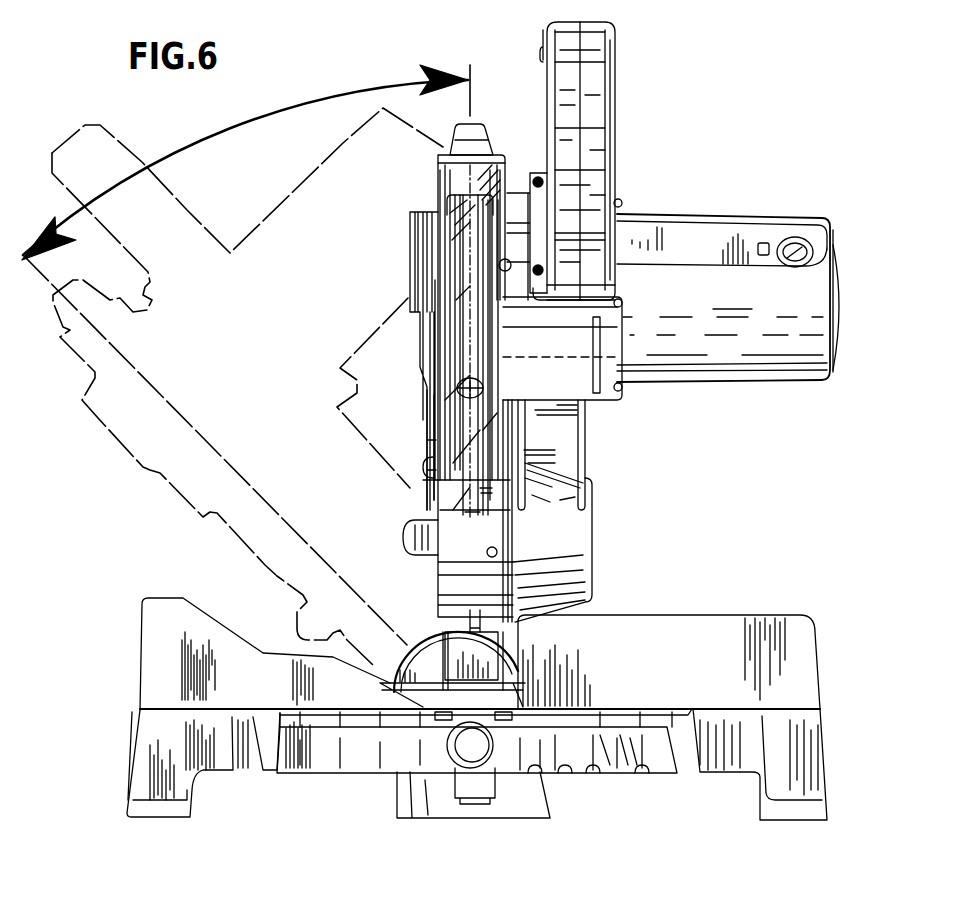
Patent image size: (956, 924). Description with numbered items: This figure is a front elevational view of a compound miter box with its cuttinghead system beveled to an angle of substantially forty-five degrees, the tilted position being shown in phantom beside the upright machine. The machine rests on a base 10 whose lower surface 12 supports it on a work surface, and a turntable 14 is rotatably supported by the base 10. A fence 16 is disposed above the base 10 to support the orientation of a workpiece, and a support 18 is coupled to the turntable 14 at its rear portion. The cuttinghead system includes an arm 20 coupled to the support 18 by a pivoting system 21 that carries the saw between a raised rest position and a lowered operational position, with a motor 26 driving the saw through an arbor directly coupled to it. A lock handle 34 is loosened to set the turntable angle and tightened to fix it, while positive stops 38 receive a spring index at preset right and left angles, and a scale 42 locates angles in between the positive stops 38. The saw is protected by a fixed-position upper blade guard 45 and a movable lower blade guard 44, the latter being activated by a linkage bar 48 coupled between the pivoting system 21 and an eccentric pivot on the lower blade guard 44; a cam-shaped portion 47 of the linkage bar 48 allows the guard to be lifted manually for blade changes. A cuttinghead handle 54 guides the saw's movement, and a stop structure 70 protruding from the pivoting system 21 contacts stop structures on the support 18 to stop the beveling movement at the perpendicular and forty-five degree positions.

The base 10 is at (233, 767).
The lower surface 12 is at (767, 822).
The turntable 14 is at (597, 712).
The fence 16 is at (727, 630).
The support 18 is at (428, 650).
The arm 20 is at (588, 457).
The pivoting system 21 is at (436, 574).
The motor 26 is at (728, 298).
The lock handle 34 is at (407, 805).
The positive stops 38 is at (643, 770).
The scale 42 is at (624, 724).
The lower blade guard 44 is at (484, 410).
The upper blade guard 45 is at (478, 127).
The cam-shaped portion 47 is at (410, 262).
The linkage bar 48 is at (428, 412).
The cuttinghead handle 54 is at (615, 130).
The stop structure 70 is at (477, 620).